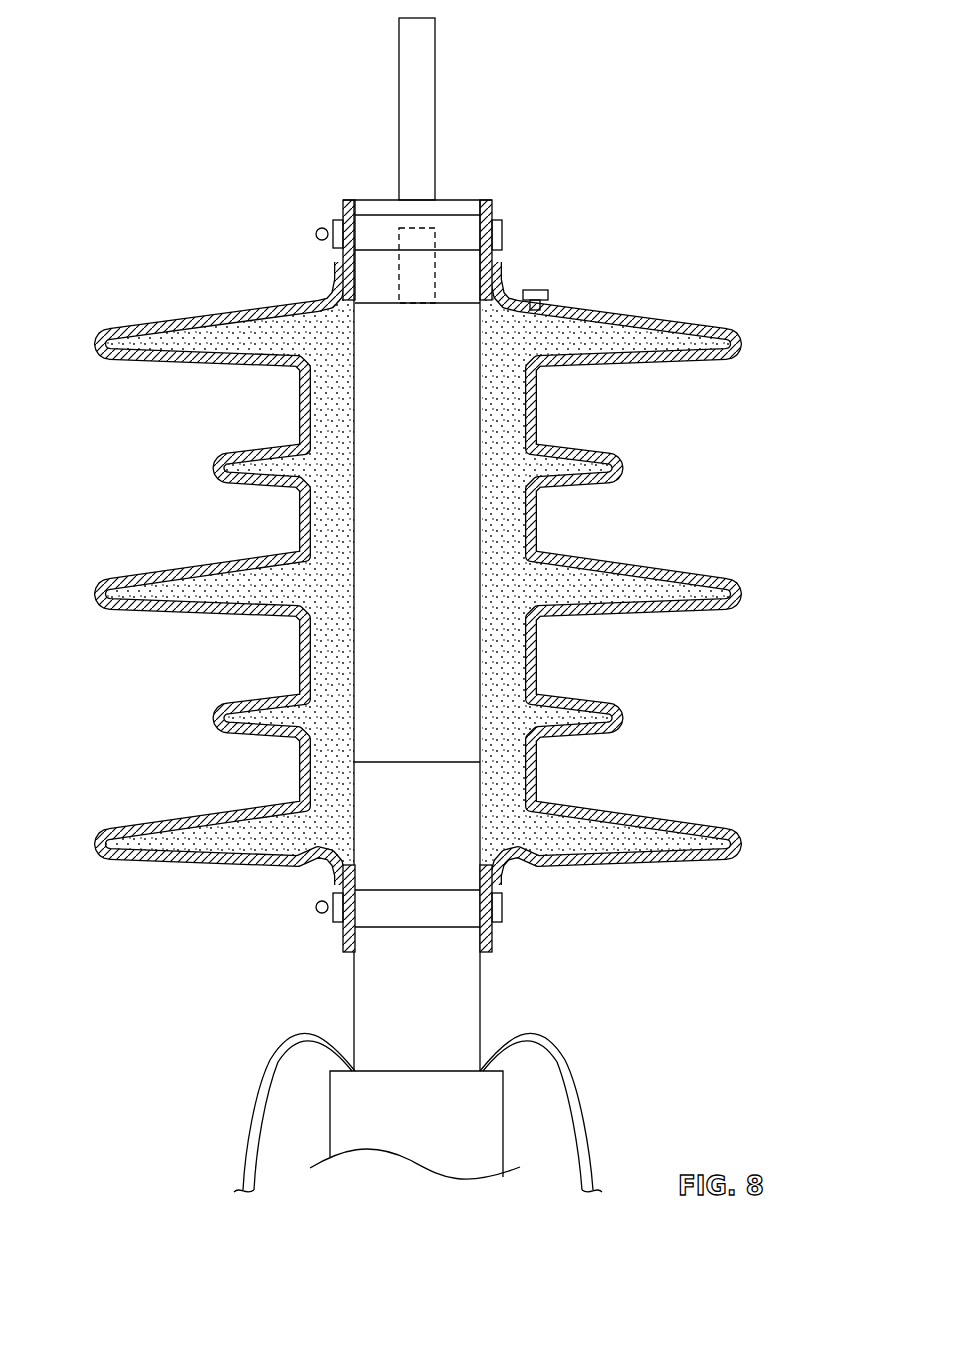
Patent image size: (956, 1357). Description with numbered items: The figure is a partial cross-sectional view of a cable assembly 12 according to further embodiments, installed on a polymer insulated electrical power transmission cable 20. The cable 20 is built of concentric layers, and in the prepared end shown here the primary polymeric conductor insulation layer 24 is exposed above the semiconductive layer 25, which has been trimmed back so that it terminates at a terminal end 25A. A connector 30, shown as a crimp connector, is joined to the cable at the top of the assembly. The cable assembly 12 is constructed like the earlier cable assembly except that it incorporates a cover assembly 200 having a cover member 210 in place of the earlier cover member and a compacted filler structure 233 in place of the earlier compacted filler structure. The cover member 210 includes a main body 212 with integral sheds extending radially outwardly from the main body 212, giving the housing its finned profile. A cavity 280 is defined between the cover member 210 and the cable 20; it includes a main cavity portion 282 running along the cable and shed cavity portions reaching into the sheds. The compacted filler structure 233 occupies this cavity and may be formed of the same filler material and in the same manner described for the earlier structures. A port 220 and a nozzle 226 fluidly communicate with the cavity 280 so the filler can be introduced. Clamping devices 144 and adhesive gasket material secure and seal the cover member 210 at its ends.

The cable assembly 12 is at (147, 123).
The polymer insulated electrical power transmission cable 20 is at (487, 997).
The primary polymeric conductor insulation layer 24 is at (425, 478).
The semiconductive layer 25 is at (448, 840).
The terminal end 25A is at (418, 765).
The connector 30 is at (456, 203).
The clamping devices 144 is at (504, 907).
The cover assembly 200 is at (436, 552).
The cover member 210 is at (682, 562).
The main body 212 is at (538, 412).
The port 220 is at (578, 310).
The nozzle 226 is at (540, 290).
The compacted filler structure 233 is at (326, 427).
The cavity 280 is at (340, 668).
The main cavity portion 282 is at (340, 580).